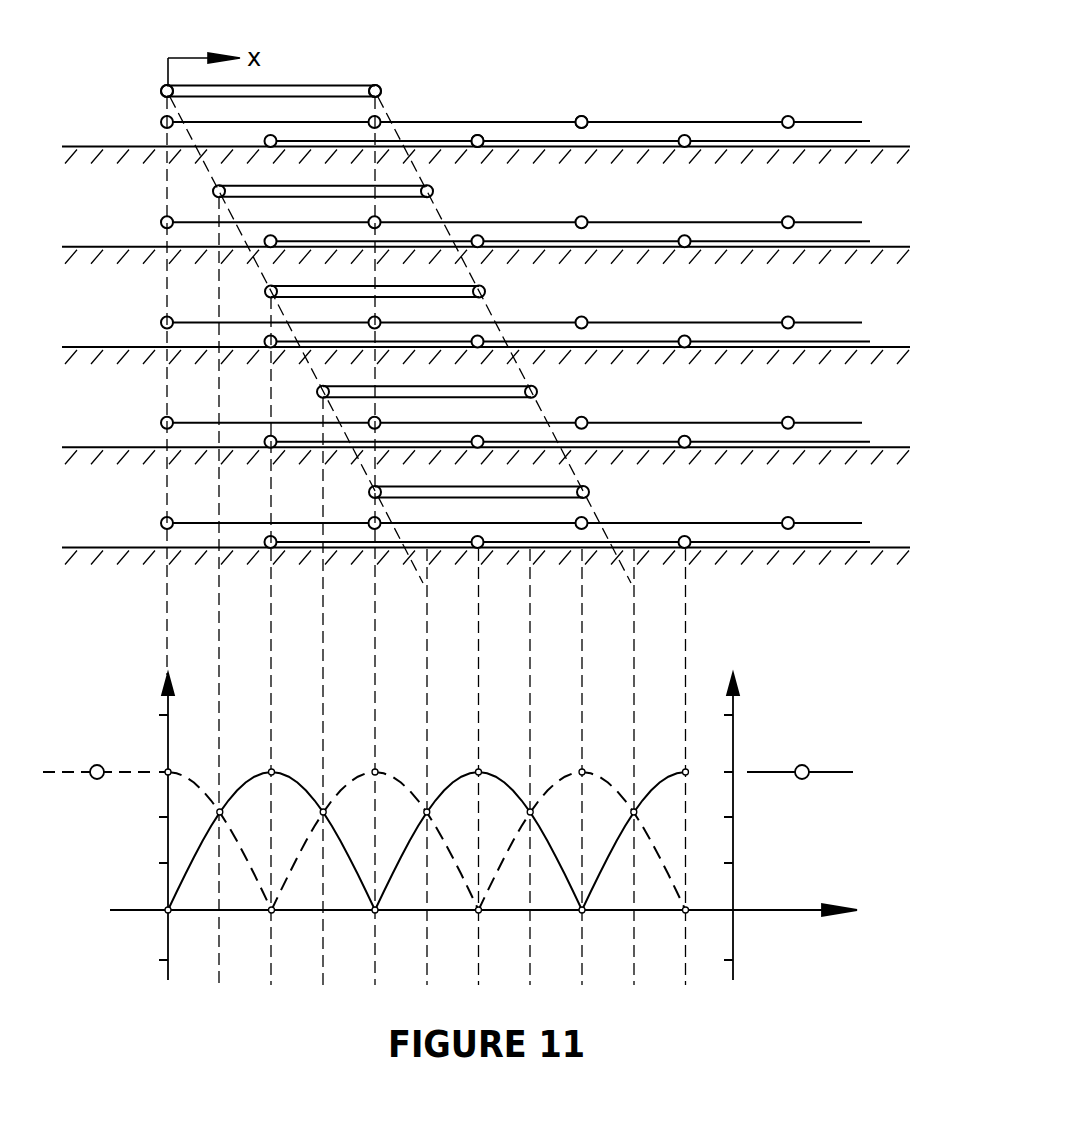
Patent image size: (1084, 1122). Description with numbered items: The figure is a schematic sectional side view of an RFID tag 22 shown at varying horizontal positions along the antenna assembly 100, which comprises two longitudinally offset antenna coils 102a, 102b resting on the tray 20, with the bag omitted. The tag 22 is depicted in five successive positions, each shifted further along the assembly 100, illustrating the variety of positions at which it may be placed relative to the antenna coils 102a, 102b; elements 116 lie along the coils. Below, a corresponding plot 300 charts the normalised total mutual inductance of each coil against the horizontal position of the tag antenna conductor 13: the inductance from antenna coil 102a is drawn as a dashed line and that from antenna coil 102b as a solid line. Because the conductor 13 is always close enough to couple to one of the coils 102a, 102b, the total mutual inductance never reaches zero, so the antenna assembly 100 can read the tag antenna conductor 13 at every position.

The tag antenna conductor 13 is at (160, 91).
The RFID tag 22 is at (287, 92).
The magnetic target 116 is at (475, 131).
The antenna assembly 100 is at (676, 112).
The antenna coil 102a is at (810, 121).
The antenna coil 102b is at (870, 140).
The tray 20 is at (900, 145).
The plot 300 is at (774, 860).